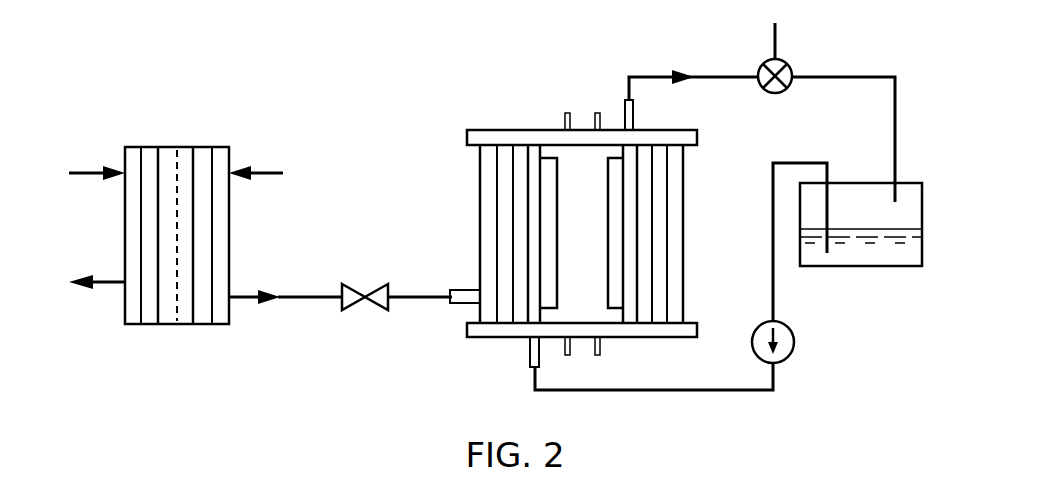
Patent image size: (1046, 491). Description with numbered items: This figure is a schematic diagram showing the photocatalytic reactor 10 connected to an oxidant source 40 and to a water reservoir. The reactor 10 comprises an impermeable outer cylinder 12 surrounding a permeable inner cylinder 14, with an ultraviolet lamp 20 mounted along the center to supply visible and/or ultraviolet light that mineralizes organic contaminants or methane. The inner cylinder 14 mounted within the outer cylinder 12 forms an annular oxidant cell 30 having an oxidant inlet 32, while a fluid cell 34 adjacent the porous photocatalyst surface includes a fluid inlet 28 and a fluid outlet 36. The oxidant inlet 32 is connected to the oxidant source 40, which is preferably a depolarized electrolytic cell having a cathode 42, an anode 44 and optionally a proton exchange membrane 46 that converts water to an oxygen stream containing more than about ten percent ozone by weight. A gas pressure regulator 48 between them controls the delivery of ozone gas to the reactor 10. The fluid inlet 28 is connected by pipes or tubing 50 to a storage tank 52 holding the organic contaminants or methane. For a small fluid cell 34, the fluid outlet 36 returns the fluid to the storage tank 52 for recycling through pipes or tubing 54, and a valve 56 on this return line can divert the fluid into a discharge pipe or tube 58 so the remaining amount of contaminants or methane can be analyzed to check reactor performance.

The photocatalytic reactor 10 is at (510, 129).
The impermeable outer cylinder 12 is at (675, 263).
The permeable inner cylinder 14 is at (643, 237).
The ultraviolet lamp 20 is at (566, 242).
The fluid inlet 28 is at (528, 357).
The annular oxidant cell 30 is at (505, 207).
The oxidant inlet 32 is at (472, 289).
The fluid cell 34 is at (625, 202).
The fluid outlet 36 is at (635, 115).
The oxidant source 40 is at (90, 112).
The cathode 42 is at (132, 326).
The anode 44 is at (215, 326).
The proton exchange membrane 46 is at (177, 314).
The gas pressure regulator 48 is at (383, 312).
The pipes or tubing 50 is at (662, 393).
The storage tank 52 is at (853, 268).
The pipes or tubing 54 is at (655, 72).
The valve 56 is at (788, 62).
The discharge pipe or tube 58 is at (778, 43).